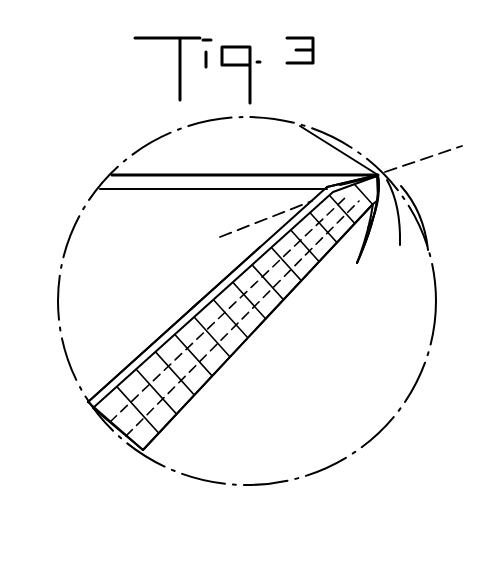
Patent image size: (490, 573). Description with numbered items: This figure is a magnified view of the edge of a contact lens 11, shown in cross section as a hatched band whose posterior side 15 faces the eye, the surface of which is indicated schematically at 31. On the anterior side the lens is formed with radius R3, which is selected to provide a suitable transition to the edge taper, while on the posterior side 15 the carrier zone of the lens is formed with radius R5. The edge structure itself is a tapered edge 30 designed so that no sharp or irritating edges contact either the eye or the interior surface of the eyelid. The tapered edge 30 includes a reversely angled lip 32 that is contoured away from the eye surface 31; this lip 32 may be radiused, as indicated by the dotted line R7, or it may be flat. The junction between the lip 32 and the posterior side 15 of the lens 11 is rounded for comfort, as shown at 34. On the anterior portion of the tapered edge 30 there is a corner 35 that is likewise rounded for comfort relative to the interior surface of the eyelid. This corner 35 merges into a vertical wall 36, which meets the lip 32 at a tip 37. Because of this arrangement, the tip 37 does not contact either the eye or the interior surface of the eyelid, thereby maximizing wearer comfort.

The contact lens 11 is at (163, 418).
The posterior side 15 is at (160, 343).
The surface of the eye 31 is at (127, 364).
The radius R5 is at (190, 306).
The radius R3 is at (226, 370).
The tapered edge 30 is at (370, 149).
The reversely angled lip 32 is at (346, 170).
The rounded junction 34 is at (327, 188).
The corner 35 is at (357, 263).
The vertical wall 36 is at (371, 196).
The tip 37 is at (379, 175).
The radius R7 is at (412, 168).